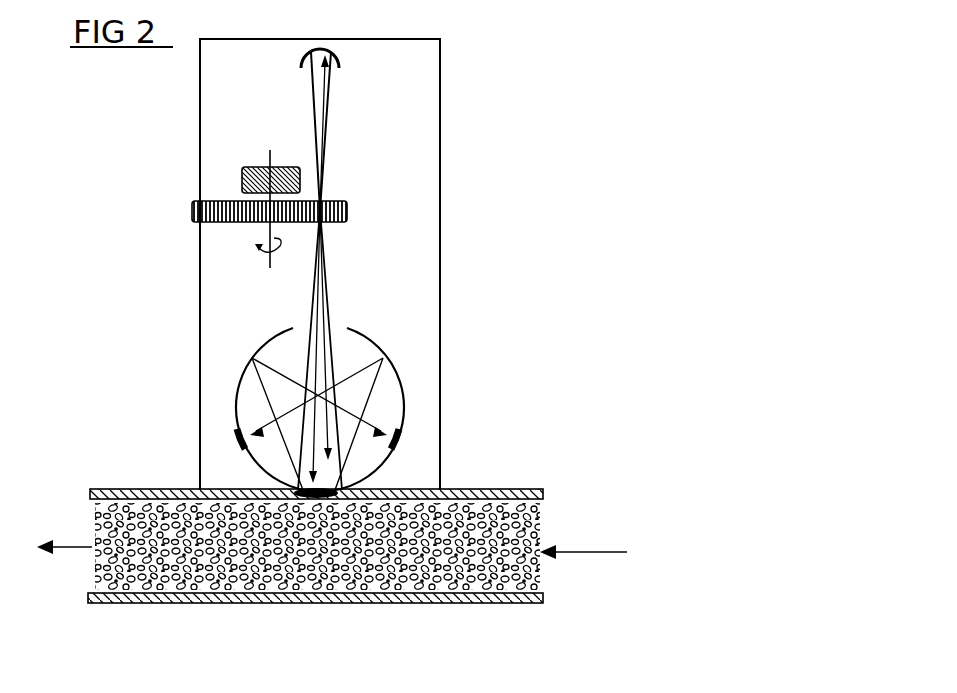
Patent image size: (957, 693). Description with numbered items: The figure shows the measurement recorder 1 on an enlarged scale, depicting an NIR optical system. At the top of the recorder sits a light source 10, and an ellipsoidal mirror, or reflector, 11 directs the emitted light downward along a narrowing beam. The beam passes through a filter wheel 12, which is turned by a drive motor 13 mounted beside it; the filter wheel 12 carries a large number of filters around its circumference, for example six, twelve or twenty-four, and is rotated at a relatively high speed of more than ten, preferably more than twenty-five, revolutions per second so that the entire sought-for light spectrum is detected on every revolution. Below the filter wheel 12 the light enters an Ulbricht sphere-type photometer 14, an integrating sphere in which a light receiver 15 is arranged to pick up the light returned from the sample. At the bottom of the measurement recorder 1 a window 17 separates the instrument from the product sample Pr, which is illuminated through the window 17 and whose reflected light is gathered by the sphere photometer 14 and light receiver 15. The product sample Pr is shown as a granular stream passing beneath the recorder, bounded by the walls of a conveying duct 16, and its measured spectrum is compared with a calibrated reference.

The measurement recorder 1 is at (588, 272).
The light source 10 is at (338, 53).
The ellipsoidal mirror (reflector) 11 is at (340, 66).
The filter wheel 12 is at (347, 211).
The drive motor 13 is at (257, 167).
The Ulbricht sphere-type photometer 14 is at (400, 397).
The light receiver 15 is at (393, 440).
The conveyor duct / conduit 16 is at (543, 600).
The window 17 is at (295, 488).
The product sample Pr is at (540, 513).